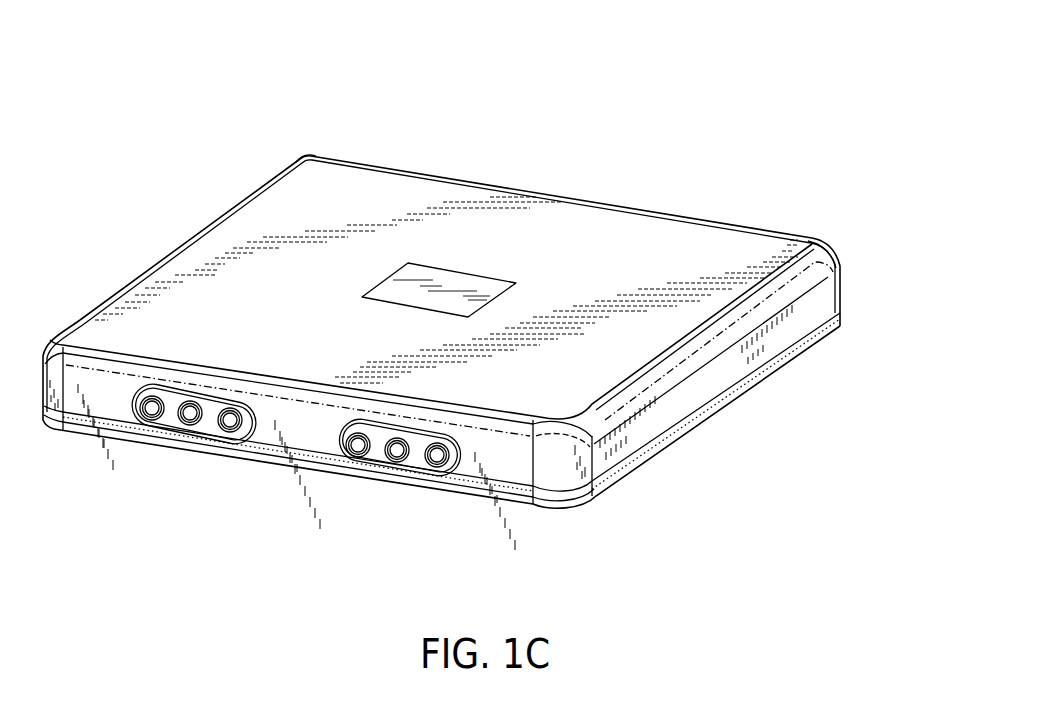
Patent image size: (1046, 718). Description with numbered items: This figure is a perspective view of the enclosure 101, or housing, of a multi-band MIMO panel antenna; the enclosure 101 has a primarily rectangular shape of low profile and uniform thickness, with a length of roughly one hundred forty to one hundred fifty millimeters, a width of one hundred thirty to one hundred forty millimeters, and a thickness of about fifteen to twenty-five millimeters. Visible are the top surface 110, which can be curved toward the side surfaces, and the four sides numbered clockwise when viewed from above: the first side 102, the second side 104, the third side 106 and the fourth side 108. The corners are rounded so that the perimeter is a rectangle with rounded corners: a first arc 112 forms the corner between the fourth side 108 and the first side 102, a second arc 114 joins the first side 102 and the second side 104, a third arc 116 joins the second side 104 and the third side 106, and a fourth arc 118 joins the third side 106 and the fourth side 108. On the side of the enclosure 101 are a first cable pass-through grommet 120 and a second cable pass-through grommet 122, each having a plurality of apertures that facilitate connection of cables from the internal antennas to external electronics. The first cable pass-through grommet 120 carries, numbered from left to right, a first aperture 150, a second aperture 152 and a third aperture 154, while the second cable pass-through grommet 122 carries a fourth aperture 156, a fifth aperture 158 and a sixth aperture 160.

The enclosure 101 is at (825, 108).
The first side 102 is at (530, 192).
The second side 104 is at (842, 303).
The third side 106 is at (512, 473).
The fourth side 108 is at (97, 307).
The top surface 110 is at (252, 273).
The first arc 112 is at (305, 154).
The second arc 114 is at (826, 240).
The third arc 116 is at (577, 503).
The fourth arc 118 is at (47, 421).
The first cable pass-through grommet 120 is at (150, 428).
The second cable pass-through grommet 122 is at (349, 460).
The first aperture 150 is at (148, 432).
The second aperture 152 is at (190, 427).
The third aperture 154 is at (232, 437).
The fourth aperture 156 is at (358, 466).
The fifth aperture 158 is at (395, 467).
The sixth aperture 160 is at (438, 472).